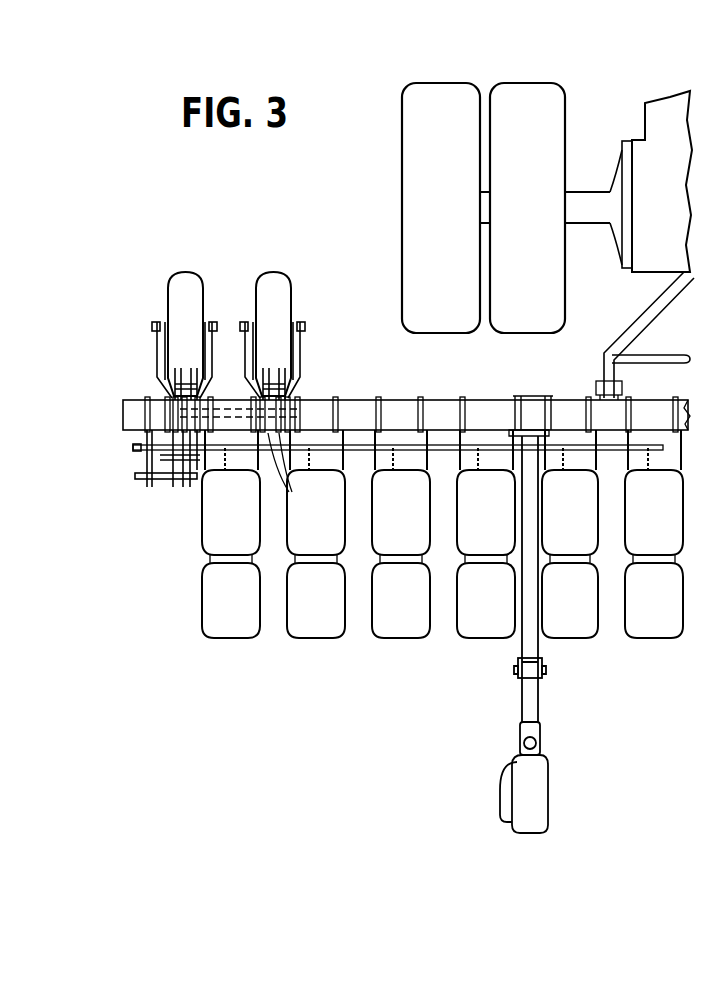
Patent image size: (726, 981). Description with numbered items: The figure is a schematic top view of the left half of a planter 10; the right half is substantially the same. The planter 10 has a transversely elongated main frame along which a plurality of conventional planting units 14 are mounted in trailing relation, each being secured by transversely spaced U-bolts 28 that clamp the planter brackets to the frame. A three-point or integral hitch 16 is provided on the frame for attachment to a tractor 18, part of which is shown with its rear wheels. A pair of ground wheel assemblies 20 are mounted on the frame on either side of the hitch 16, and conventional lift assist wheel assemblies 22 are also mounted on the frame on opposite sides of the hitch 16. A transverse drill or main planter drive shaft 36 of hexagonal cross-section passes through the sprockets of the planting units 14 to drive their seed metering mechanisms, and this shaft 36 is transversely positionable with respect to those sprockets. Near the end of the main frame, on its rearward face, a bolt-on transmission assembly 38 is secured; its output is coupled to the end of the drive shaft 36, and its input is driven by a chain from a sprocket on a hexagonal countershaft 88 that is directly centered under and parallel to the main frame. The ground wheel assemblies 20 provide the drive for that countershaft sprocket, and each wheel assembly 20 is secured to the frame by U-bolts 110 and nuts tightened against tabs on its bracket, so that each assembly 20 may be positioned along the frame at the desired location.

The planter 10 is at (281, 656).
The planting units 14 is at (236, 530).
The three-point or integral hitch 16 is at (598, 366).
The tractor 18 is at (657, 110).
The ground wheel assemblies 20 is at (165, 280).
The lift assist wheel assemblies 22 is at (545, 733).
The U-bolts 28 is at (419, 399).
The transverse drill or main planter drive shaft 36 is at (357, 445).
The bolt-on transmission assembly 38 is at (152, 496).
The countershaft 88 is at (132, 400).
The U-bolts 110 is at (298, 473).